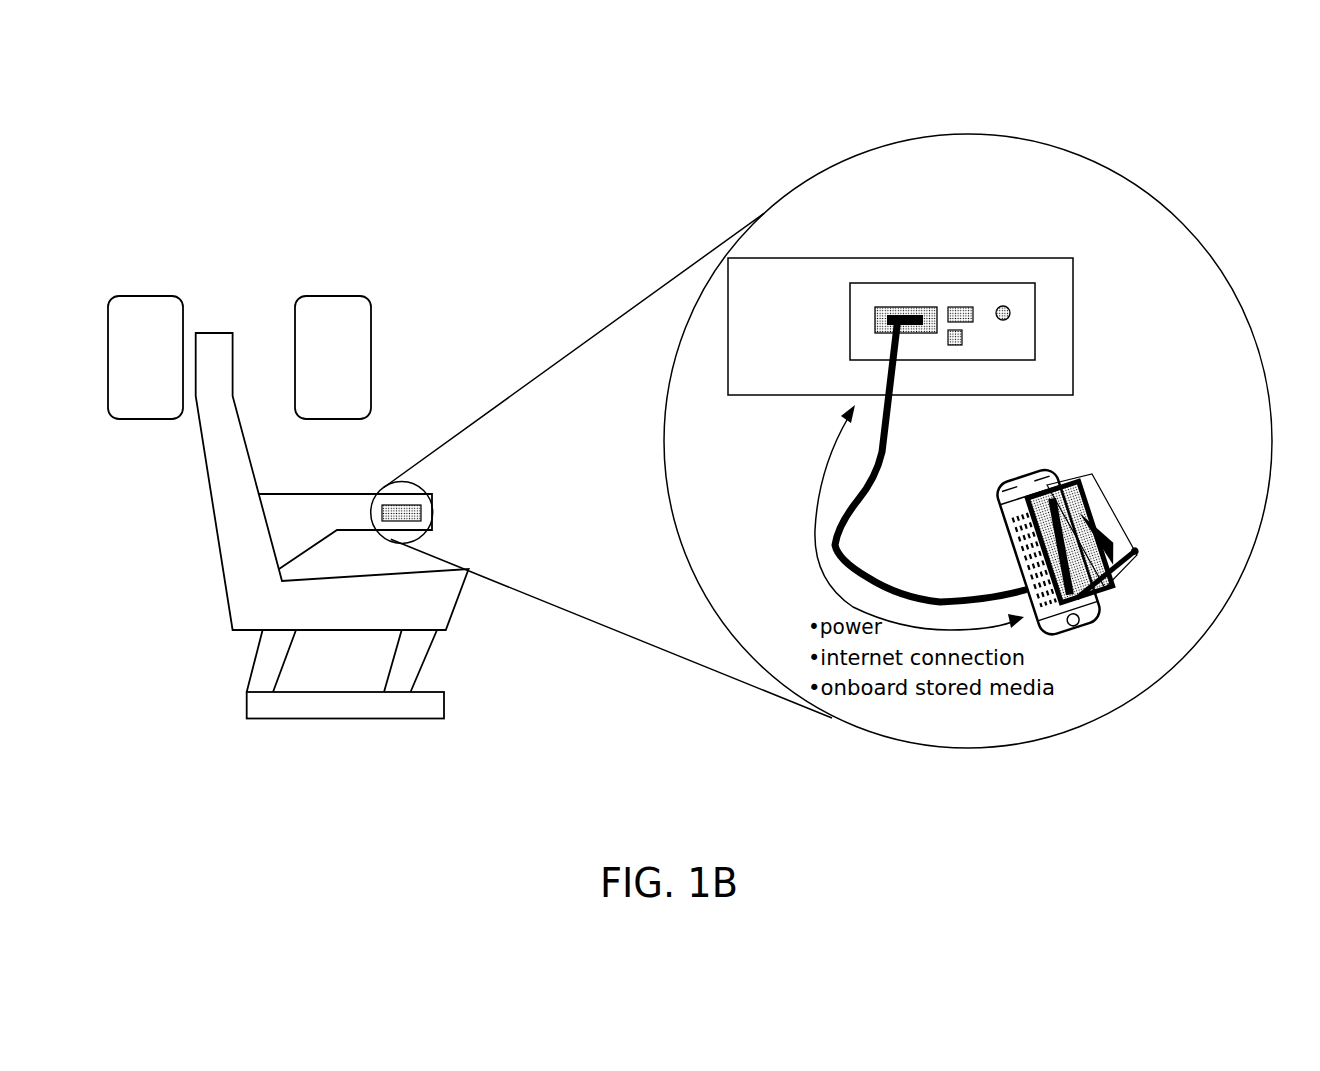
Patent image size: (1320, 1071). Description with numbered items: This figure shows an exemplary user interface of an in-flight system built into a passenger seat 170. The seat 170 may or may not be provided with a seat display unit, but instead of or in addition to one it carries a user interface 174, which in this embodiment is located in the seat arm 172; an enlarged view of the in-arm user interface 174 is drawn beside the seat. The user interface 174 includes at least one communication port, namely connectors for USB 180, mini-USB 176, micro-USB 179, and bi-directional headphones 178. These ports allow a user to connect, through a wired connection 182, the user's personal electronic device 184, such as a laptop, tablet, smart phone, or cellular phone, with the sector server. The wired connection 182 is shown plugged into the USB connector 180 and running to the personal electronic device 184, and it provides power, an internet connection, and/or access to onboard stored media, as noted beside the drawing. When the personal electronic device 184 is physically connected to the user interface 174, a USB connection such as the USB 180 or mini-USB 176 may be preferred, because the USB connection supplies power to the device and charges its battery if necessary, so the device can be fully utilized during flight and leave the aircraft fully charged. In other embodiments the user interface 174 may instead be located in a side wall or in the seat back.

The seat 170 is at (234, 506).
The seat arm 172 is at (308, 507).
The user interface 174 is at (1022, 332).
The mini-USB connector 176 is at (962, 305).
The bi-directional headphones connector 178 is at (1000, 305).
The micro-USB connector 179 is at (962, 343).
The USB connector 180 is at (875, 320).
The wired connection 182 is at (882, 462).
The personal electronic device 184 is at (1110, 517).